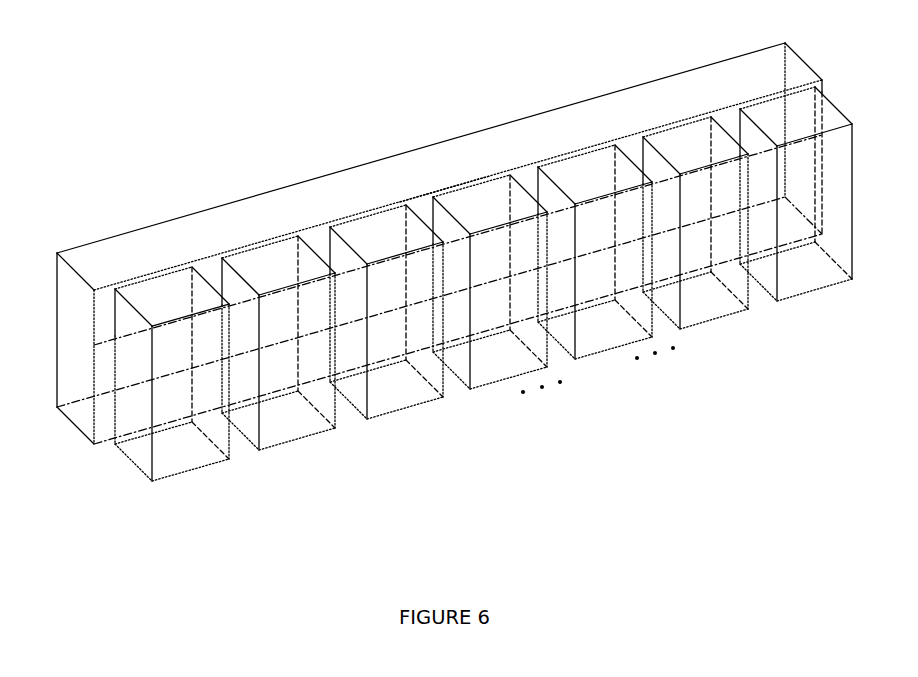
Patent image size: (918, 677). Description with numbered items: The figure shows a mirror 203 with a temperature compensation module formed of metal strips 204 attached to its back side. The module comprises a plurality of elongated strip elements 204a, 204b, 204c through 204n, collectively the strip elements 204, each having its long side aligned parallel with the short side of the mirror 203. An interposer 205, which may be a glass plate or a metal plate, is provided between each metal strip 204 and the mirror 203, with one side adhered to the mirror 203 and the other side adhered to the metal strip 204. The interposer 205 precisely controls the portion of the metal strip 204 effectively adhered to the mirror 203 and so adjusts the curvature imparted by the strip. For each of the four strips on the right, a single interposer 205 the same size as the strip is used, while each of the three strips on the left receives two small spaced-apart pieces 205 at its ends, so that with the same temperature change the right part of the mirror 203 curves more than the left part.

The mirror 203 is at (190, 238).
The metal strips 204 is at (444, 320).
The strip element 204a is at (172, 384).
The strip element 204b is at (278, 352).
The strip element 204c is at (386, 321).
The strip element 204n is at (796, 204).
The interposer 205 is at (445, 192).